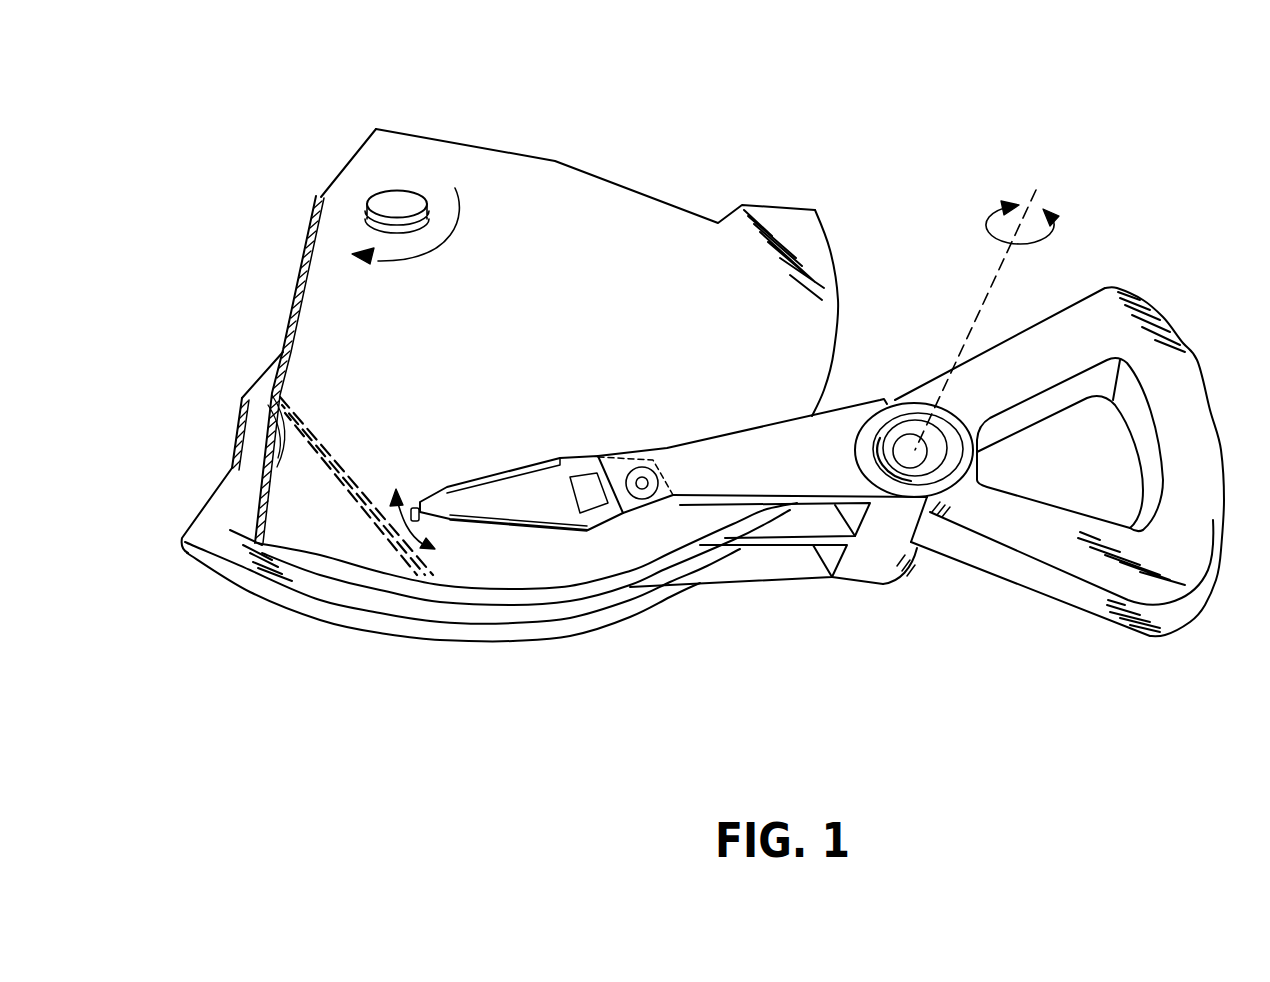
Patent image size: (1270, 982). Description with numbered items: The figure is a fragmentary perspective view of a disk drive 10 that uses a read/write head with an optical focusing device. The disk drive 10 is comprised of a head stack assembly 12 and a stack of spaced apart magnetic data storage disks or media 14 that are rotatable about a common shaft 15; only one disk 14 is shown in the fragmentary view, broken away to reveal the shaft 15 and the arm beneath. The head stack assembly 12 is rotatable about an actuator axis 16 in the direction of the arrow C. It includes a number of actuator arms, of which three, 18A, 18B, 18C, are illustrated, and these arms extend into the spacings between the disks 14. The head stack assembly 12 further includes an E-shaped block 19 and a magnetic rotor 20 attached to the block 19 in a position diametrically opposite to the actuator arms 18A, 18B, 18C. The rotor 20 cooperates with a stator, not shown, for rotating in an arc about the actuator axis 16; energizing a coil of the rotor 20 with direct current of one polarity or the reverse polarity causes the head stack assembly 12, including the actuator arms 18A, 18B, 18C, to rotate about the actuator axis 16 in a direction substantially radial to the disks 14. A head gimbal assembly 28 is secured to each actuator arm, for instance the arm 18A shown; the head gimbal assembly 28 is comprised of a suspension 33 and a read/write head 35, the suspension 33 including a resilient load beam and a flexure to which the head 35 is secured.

The disk drive 10 is at (691, 86).
The head stack assembly 12 is at (877, 622).
The magnetic data storage disks 14 is at (588, 256).
The common shaft 15 is at (381, 200).
The actuator axis 16 is at (1003, 268).
The actuator arm 18A is at (778, 424).
The actuator arm 18B is at (763, 537).
The actuator arm 18C is at (800, 580).
The E-shaped block 19 is at (887, 577).
The magnetic rotor 20 is at (1050, 582).
The head gimbal assembly 28 is at (512, 445).
The suspension 33 is at (545, 513).
The read/write head 35 is at (410, 524).